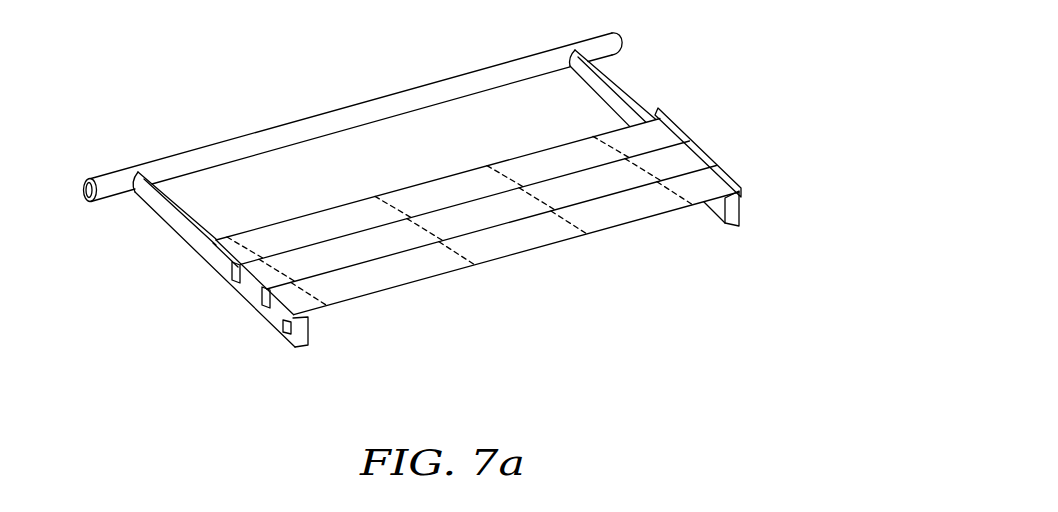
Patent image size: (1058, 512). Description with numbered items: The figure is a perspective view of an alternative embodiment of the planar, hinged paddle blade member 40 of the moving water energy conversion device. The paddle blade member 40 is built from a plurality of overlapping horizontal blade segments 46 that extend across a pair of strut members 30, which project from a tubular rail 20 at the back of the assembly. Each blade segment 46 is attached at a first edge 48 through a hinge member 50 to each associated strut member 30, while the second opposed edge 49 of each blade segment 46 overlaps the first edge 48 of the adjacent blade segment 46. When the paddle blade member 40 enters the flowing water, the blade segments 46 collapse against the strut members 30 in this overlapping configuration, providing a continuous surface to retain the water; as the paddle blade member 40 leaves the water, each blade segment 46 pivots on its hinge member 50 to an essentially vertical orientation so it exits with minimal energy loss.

The tubular rail 20 is at (330, 112).
The strut member 30 is at (152, 210).
The paddle blade member 40 is at (357, 323).
The blade segment 46 is at (712, 172).
The first edge 48 is at (591, 232).
The second opposed edge 49 is at (497, 160).
The hinge member 50 is at (285, 327).